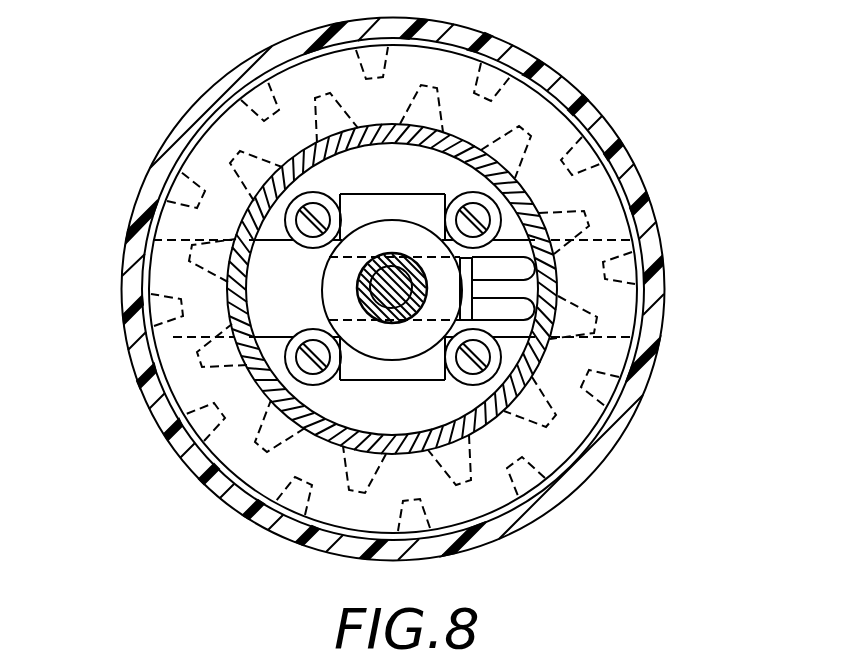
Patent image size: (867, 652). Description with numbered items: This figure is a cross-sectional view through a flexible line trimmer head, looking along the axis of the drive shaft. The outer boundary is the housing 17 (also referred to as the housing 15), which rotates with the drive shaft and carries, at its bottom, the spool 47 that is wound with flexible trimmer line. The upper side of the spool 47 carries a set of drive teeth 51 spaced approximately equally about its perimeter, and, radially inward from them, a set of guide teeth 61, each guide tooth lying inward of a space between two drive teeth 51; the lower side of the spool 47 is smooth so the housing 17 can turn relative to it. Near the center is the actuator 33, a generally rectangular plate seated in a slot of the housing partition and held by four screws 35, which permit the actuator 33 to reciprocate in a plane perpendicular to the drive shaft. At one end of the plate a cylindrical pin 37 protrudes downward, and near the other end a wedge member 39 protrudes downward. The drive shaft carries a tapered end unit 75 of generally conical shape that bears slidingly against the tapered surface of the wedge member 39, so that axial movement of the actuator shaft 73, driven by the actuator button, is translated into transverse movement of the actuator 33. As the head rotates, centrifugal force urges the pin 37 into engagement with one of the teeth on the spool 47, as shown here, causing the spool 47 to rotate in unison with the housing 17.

The housing 15 is at (406, 266).
The housing 17 is at (645, 175).
The actuator 33 is at (273, 311).
The screws 35 is at (458, 375).
The cylindrical pin 37 is at (152, 295).
The wedge member 39 is at (488, 318).
The spool 47 is at (456, 137).
The drive teeth 51 is at (576, 150).
The guide teeth 61 is at (572, 92).
The actuator shaft 73 is at (369, 262).
The tapered end unit 75 is at (380, 343).